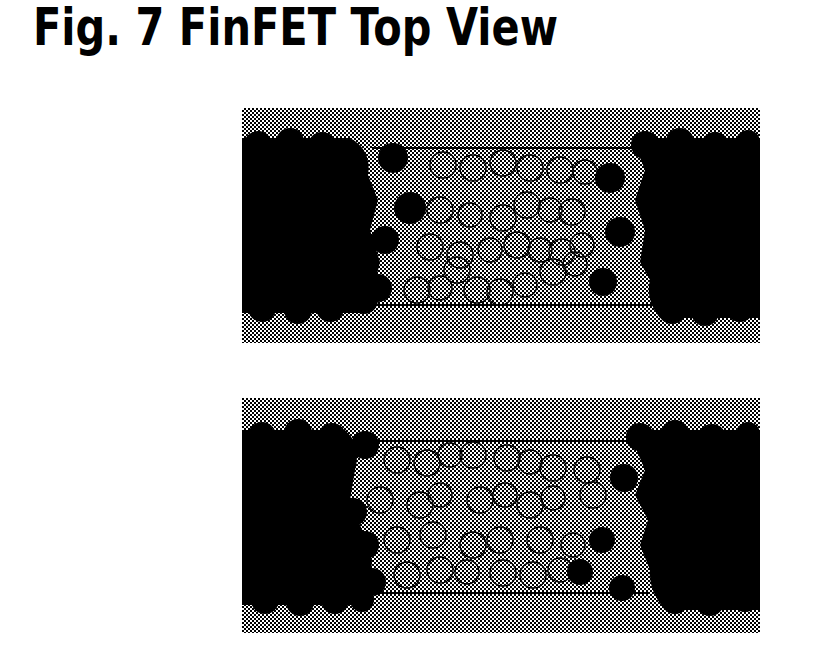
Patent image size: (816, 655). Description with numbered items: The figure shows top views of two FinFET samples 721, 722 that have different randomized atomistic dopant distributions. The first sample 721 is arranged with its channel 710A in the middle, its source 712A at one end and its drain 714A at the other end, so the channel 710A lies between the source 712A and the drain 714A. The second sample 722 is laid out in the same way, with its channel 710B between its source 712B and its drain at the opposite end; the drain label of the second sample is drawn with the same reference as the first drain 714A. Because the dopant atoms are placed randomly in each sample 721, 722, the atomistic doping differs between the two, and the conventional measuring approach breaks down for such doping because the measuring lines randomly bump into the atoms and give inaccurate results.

The source 712A is at (292, 110).
The channel 710A is at (492, 126).
The drain 714A is at (712, 130).
The source 712B is at (308, 400).
The channel 710B is at (512, 400).
The FinFET sample 721 is at (400, 225).
The FinFET sample 722 is at (396, 515).